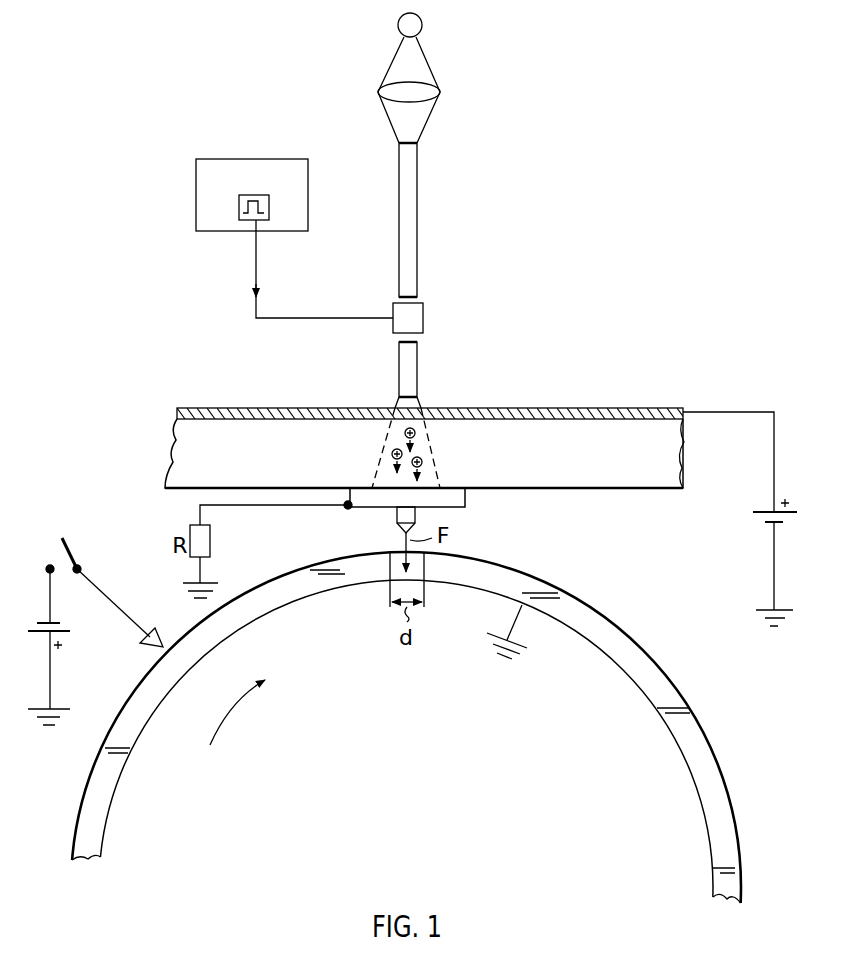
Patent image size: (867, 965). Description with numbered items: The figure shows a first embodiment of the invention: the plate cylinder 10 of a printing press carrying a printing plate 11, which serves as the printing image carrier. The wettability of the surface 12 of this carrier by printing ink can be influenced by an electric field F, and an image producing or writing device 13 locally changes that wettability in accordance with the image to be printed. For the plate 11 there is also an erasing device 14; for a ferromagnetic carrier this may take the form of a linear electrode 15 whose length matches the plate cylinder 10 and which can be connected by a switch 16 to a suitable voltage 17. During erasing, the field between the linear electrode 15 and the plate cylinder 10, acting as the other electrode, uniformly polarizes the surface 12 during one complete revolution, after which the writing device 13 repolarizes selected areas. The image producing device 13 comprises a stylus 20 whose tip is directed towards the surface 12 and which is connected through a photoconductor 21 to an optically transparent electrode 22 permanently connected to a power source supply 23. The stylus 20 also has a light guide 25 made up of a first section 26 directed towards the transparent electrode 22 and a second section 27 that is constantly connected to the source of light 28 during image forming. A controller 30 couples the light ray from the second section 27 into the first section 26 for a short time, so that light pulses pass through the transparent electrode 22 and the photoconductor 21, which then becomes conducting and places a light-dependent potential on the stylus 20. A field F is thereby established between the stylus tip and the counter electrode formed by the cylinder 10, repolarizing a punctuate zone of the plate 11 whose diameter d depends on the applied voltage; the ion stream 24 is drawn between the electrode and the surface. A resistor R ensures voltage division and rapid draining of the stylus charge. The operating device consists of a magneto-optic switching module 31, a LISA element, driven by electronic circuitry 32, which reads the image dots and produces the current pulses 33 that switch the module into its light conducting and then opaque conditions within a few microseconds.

The plate cylinder 10 is at (411, 758).
The printing plate 11 is at (653, 683).
The surface 12 is at (635, 645).
The image producing device 13 is at (424, 356).
The erasing device 14 is at (70, 613).
The linear electrode 15 is at (145, 648).
The switch 16 is at (72, 549).
The voltage 17 is at (50, 619).
The stylus 20 is at (397, 516).
The photoconductor 21 is at (516, 437).
The optically transparent electrode 22 is at (610, 413).
The power source supply 23 is at (768, 510).
The ion stream 24 is at (387, 433).
The light guide 25 is at (405, 344).
The first light guide section 26 is at (399, 374).
The second light guide section 27 is at (417, 188).
The source of light 28 is at (423, 26).
The controller 30 is at (270, 234).
The magneto-optic switching module 31 is at (393, 310).
The electronic circuitry 32 is at (205, 194).
The current pulses 33 is at (239, 207).